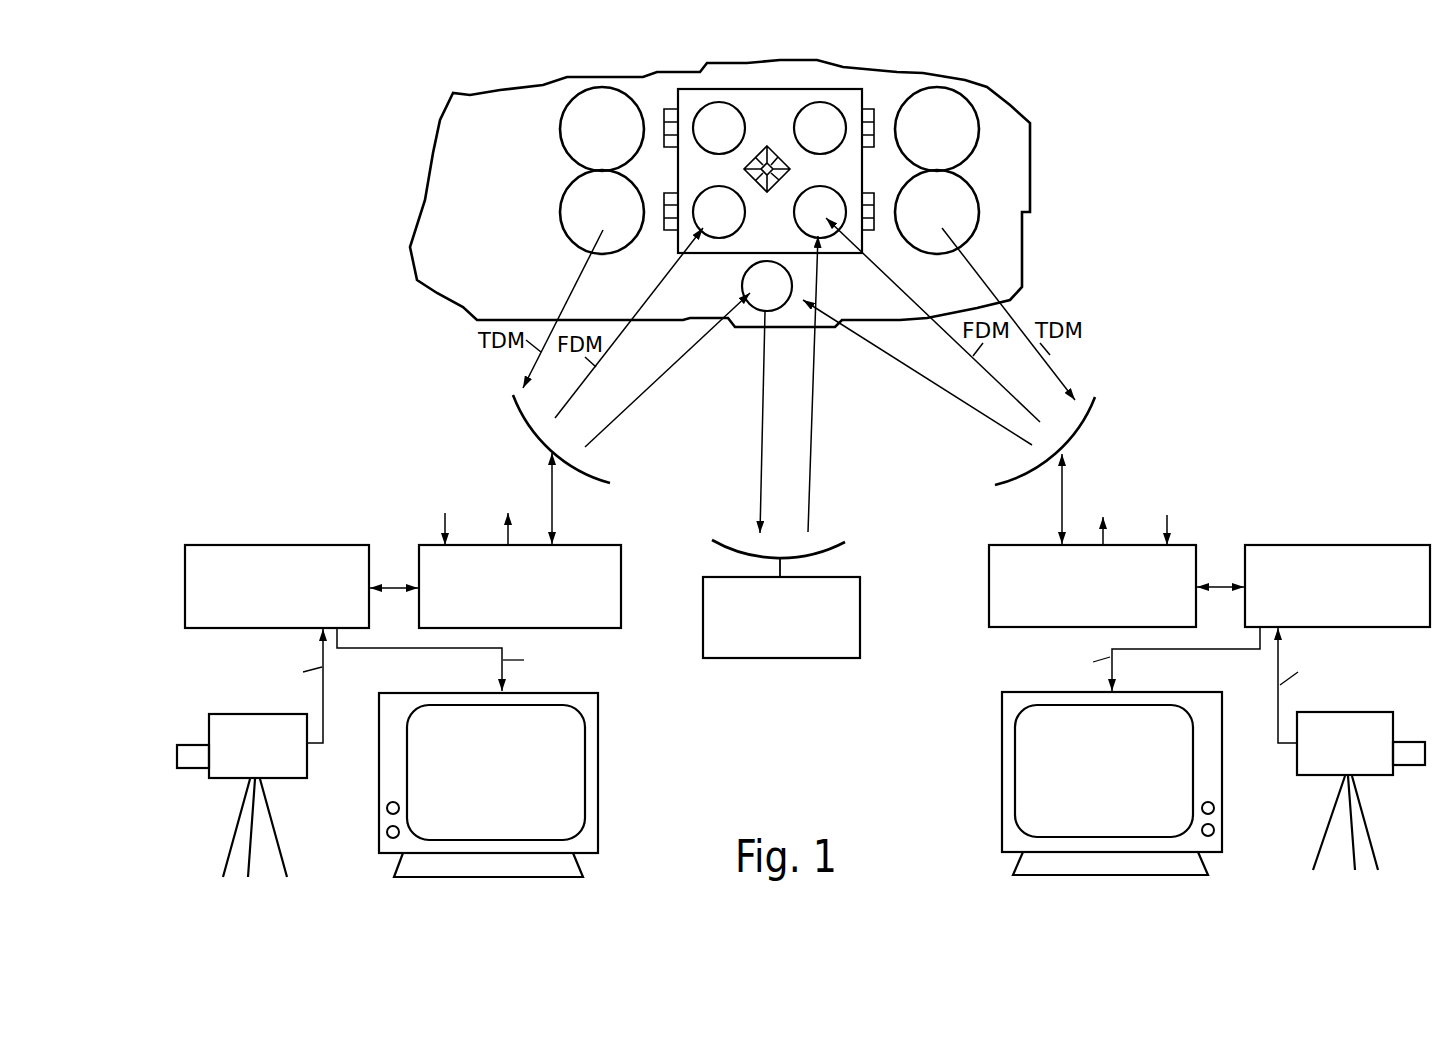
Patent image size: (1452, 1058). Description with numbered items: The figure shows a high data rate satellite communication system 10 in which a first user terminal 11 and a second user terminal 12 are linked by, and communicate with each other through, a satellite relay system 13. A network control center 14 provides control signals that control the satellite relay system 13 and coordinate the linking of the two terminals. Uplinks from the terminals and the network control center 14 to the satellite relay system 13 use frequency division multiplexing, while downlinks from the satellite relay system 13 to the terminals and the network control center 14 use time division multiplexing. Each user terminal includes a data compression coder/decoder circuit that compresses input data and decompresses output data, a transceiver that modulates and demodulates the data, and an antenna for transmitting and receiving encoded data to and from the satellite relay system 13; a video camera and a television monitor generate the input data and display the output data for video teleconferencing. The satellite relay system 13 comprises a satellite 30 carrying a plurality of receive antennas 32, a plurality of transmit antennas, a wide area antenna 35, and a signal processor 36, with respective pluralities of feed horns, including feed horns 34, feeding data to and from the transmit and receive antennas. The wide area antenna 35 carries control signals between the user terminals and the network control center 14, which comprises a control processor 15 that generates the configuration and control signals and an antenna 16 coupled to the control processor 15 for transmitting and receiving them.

The high data rate satellite communication system 10 is at (253, 133).
The first user terminal 11 is at (255, 433).
The second user terminal 12 is at (1317, 352).
The satellite relay system 13 is at (1031, 162).
The network control center 14 is at (840, 700).
The control processor 15 is at (793, 660).
The antenna 16 is at (846, 545).
The satellite 30 is at (519, 282).
The receive antennas 32 is at (800, 116).
The feed horns 34 is at (767, 190).
The wide area antenna 35 is at (760, 310).
The signal processor 36 is at (798, 88).